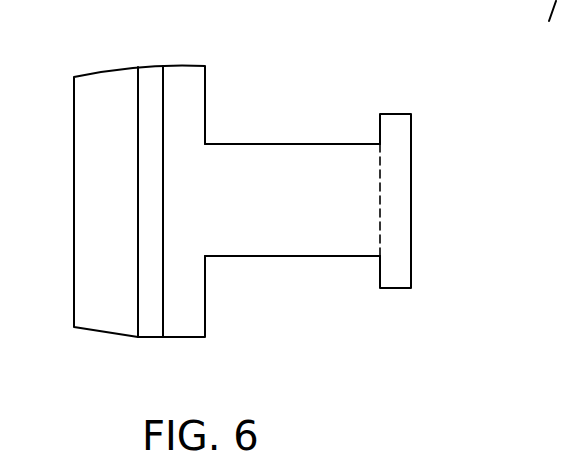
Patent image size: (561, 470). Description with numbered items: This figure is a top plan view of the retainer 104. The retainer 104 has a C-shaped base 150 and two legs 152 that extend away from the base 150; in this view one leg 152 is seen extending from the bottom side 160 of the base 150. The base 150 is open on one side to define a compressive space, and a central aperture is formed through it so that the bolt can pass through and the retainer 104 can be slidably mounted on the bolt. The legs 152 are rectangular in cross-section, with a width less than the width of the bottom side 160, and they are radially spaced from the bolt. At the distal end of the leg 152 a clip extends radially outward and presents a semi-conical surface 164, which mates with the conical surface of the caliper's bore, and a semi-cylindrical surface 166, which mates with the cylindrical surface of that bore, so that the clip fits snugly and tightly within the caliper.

The retainer 104 is at (277, 172).
The base 150 is at (412, 130).
The legs 152 is at (265, 163).
The bottom side 160 is at (379, 270).
The semi-conical surface 164 is at (112, 70).
The semi-cylindrical surface 166 is at (152, 63).